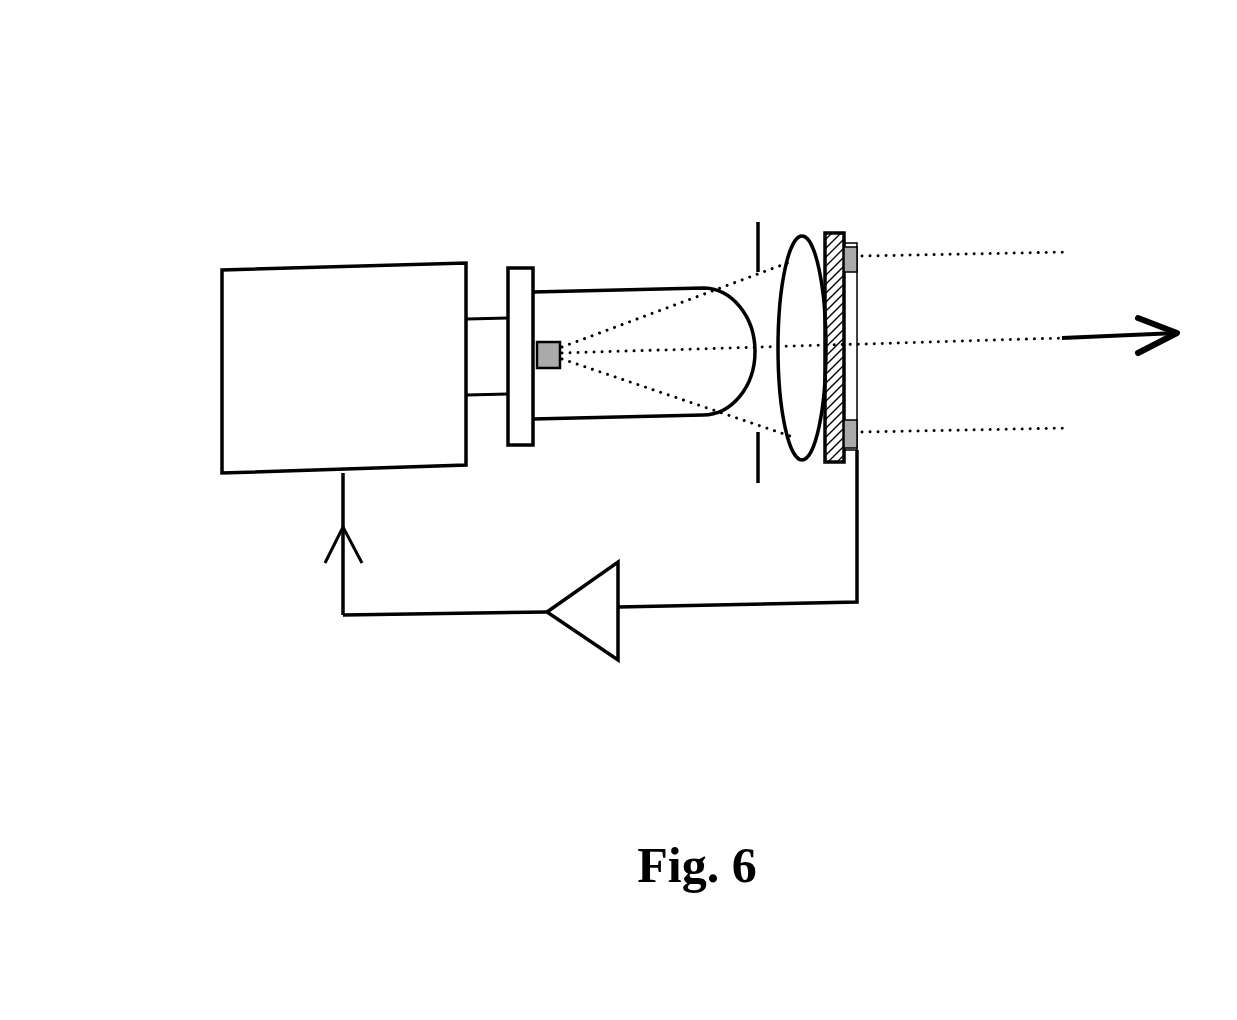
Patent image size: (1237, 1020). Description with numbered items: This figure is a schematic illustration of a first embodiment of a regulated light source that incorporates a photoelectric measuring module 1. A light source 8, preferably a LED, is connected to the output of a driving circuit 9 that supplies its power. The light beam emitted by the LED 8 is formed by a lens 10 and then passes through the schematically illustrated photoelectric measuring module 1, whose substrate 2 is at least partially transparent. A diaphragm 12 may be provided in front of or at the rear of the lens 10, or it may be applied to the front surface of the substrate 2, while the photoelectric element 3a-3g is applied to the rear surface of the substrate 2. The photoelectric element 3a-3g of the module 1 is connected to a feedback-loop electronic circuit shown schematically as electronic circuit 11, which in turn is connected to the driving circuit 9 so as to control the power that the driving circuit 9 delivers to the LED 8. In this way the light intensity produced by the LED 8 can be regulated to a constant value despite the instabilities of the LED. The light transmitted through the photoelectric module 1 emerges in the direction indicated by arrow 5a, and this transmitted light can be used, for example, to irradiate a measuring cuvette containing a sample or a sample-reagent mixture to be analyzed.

The photoelectric measuring module 1 is at (995, 290).
The substrate 2 is at (838, 233).
The photoelectric element 3a-3g is at (863, 248).
The arrow 5a is at (1113, 342).
The light source 8 is at (570, 313).
The driving circuit 9 is at (308, 309).
The lens 10 is at (808, 430).
The electronic circuit 11 is at (595, 607).
The diaphragm 12 is at (750, 210).